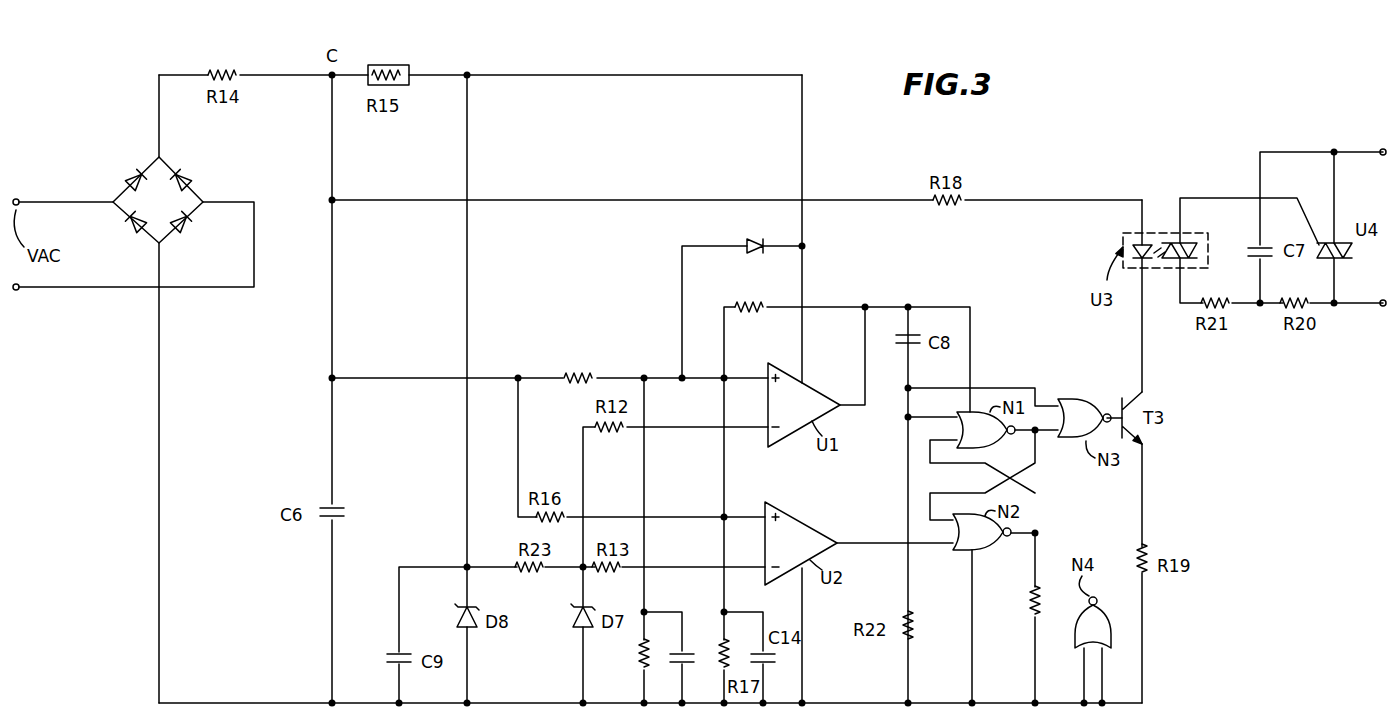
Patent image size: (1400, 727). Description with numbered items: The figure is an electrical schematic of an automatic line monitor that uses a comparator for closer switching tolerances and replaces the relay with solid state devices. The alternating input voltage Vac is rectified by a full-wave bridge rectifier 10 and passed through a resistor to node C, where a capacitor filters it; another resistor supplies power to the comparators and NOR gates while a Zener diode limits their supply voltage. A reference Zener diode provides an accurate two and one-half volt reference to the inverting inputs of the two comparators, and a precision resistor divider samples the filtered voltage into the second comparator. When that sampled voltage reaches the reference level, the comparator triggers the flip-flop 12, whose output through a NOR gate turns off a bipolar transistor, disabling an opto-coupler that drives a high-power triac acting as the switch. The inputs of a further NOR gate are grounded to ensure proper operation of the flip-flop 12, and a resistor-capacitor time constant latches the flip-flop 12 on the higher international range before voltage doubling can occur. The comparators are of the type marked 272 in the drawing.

The full-wave bridge rectifier 10 is at (128, 182).
The flip-flop 12 is at (1030, 472).
The operational amplifier (U1, U2) 272 is at (813, 388).